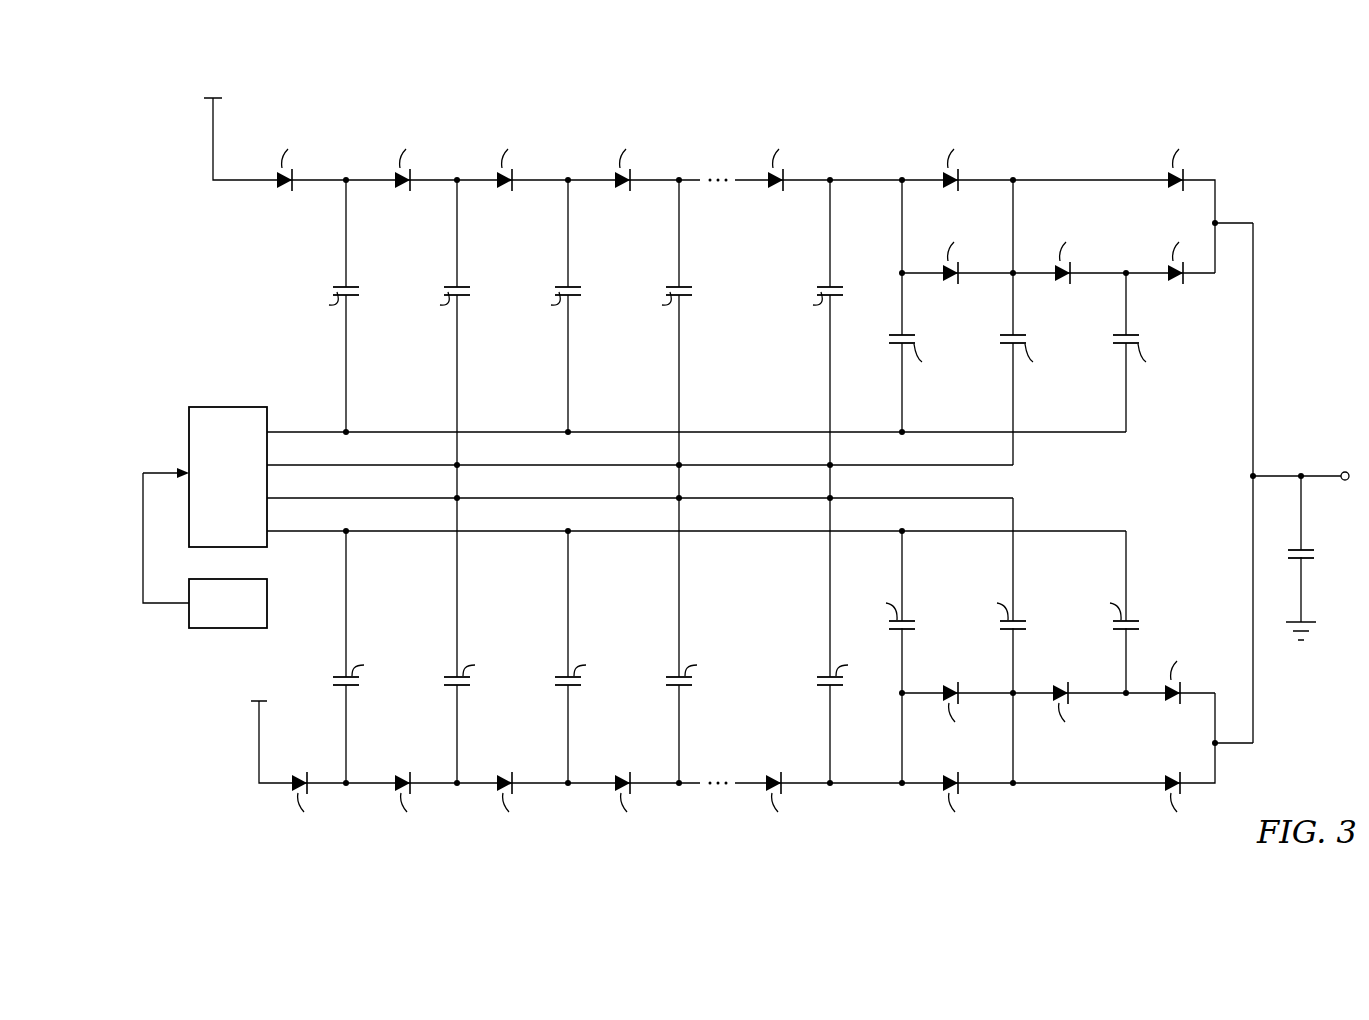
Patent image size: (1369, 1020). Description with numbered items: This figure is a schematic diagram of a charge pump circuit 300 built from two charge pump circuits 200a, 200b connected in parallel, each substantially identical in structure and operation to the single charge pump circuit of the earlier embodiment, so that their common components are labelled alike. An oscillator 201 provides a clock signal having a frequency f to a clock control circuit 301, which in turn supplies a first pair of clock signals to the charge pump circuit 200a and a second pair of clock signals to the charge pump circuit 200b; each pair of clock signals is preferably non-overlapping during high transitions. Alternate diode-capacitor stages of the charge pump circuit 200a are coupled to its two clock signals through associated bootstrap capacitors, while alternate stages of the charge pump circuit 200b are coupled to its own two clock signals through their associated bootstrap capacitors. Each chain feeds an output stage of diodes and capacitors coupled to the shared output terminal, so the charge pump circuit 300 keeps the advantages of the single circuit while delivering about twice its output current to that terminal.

The charge pump circuit 300 is at (552, 102).
The clock control circuit 301 is at (250, 405).
The oscillator 201 is at (267, 610).
The charge pump circuit 200a is at (230, 294).
The charge pump circuit 200b is at (264, 651).